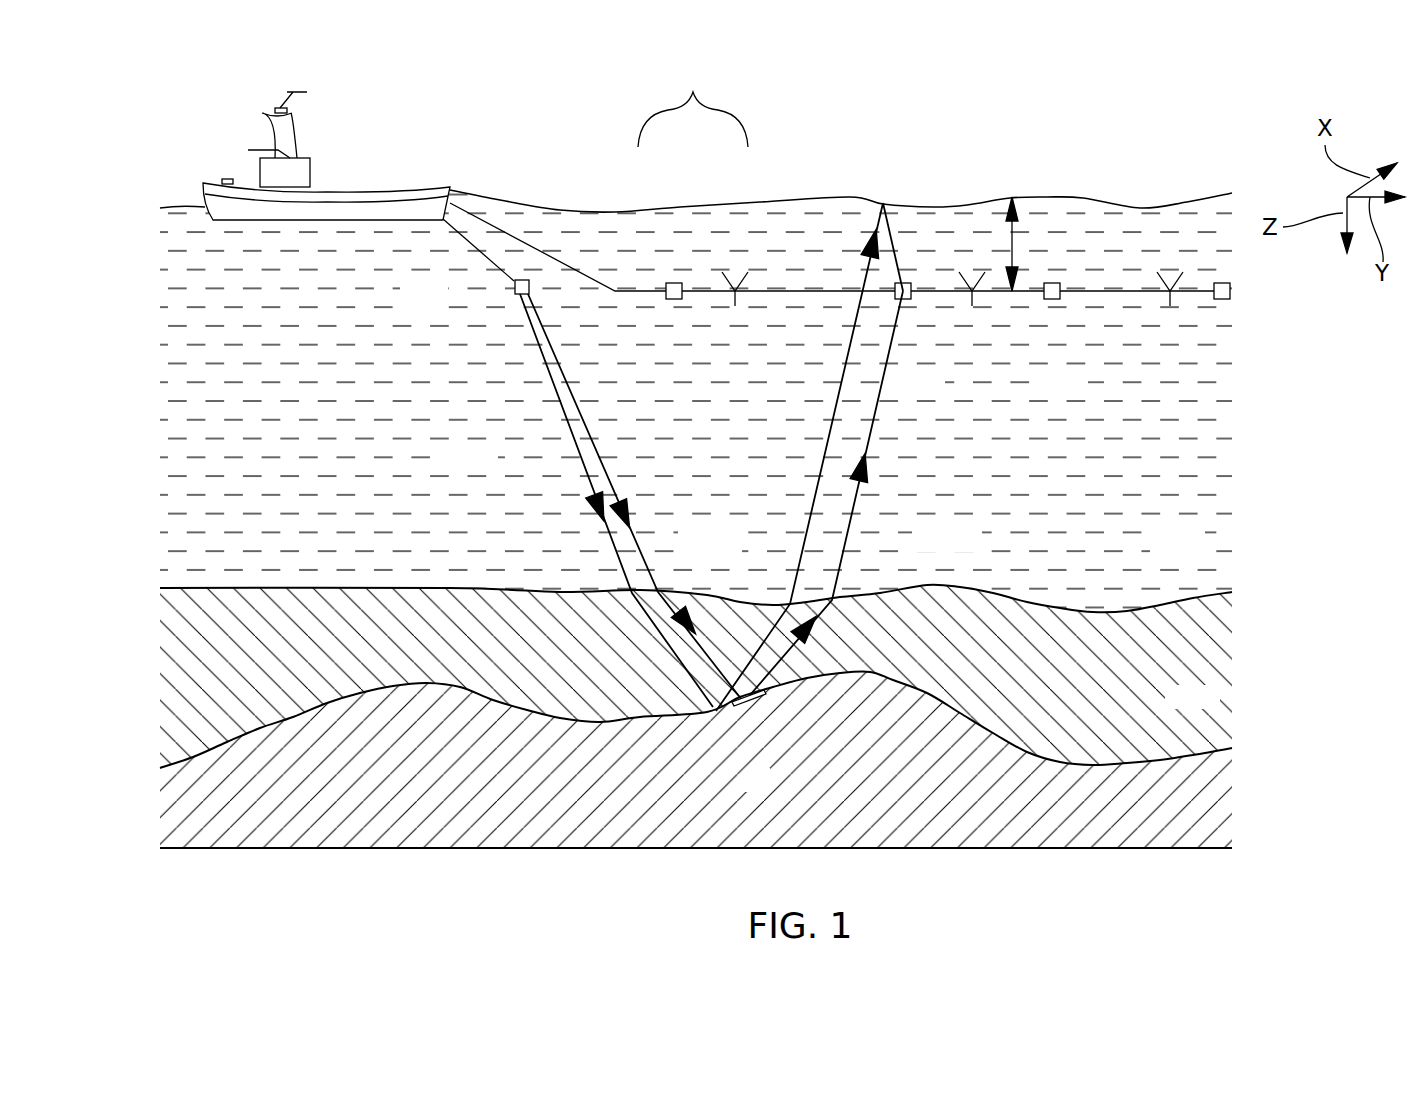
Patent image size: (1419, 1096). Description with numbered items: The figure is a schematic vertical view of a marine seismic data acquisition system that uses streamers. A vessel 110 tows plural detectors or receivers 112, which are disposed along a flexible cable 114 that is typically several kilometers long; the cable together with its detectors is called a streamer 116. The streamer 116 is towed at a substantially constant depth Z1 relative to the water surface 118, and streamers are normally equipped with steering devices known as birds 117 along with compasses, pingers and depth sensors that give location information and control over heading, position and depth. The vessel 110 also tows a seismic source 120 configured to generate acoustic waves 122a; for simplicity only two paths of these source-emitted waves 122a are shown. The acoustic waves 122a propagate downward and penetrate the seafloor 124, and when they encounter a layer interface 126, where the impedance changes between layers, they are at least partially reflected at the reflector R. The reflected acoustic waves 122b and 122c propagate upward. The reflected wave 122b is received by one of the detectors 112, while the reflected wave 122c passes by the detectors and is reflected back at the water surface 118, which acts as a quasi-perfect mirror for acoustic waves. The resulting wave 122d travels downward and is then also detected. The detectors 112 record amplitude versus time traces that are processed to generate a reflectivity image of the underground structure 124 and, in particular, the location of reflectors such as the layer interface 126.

The vessel 110 is at (278, 110).
The detectors or receivers 112 is at (675, 283).
The flexible cable 114 is at (642, 290).
The streamer 116 is at (693, 103).
The depth control devices 117 is at (1176, 300).
The water surface 118 is at (850, 197).
The seismic source 120 is at (513, 287).
The acoustic waves 122a is at (588, 436).
The reflected acoustic wave 122b is at (852, 520).
The reflected acoustic wave 122c is at (807, 522).
The wave 122d is at (893, 243).
The seafloor 124 is at (1166, 600).
The layer interface 126 is at (1182, 757).
The reflector R is at (745, 706).
The depth Z1 is at (1012, 243).